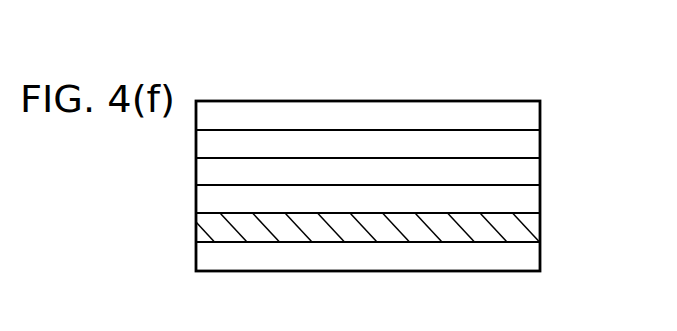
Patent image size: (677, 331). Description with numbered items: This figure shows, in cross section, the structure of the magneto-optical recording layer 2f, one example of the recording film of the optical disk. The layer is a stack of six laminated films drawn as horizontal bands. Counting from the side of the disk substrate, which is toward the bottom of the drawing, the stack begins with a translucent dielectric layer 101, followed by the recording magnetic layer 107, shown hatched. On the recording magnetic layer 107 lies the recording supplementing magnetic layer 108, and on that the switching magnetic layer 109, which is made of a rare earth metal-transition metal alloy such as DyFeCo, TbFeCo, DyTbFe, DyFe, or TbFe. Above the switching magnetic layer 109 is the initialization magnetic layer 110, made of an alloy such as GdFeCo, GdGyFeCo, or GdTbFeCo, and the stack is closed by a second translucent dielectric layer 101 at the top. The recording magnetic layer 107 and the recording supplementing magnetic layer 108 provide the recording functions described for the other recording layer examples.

The magneto-optical recording layer 2f is at (417, 154).
The translucent dielectric layer 101 is at (530, 120).
The initialization magnetic layer 110 is at (530, 148).
The switching magnetic layer 109 is at (530, 177).
The recording supplementing magnetic layer 108 is at (530, 205).
The recording magnetic layer 107 is at (530, 235).